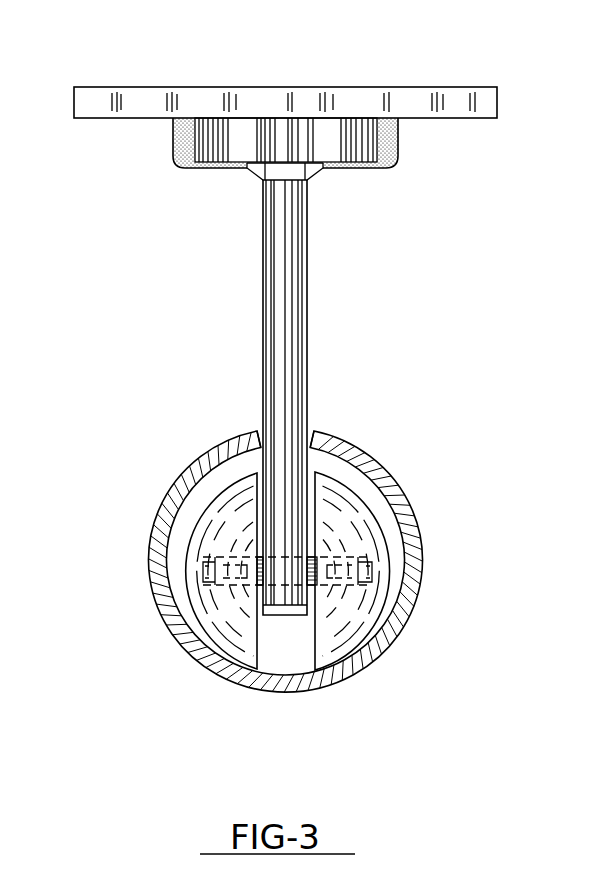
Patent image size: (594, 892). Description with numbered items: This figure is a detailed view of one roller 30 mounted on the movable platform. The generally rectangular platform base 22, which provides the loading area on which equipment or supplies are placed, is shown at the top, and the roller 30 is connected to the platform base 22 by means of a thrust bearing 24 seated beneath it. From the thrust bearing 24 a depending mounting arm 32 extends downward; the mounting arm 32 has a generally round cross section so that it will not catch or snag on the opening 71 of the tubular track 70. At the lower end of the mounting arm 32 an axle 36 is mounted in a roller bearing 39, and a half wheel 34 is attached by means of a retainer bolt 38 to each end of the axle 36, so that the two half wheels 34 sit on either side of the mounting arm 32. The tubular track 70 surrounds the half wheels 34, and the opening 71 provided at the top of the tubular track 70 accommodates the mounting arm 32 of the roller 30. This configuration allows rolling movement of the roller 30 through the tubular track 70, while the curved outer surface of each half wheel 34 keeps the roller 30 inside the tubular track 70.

The platform base 22 is at (458, 97).
The thrust bearing 24 is at (347, 148).
The mounting arm 32 is at (293, 318).
The roller 30 is at (170, 407).
The half wheel 34 is at (210, 532).
The axle 36 is at (323, 685).
The retainer bolt 38 is at (210, 573).
The roller bearing 39 is at (283, 594).
The tubular track 70 is at (397, 488).
The opening 71 is at (312, 430).